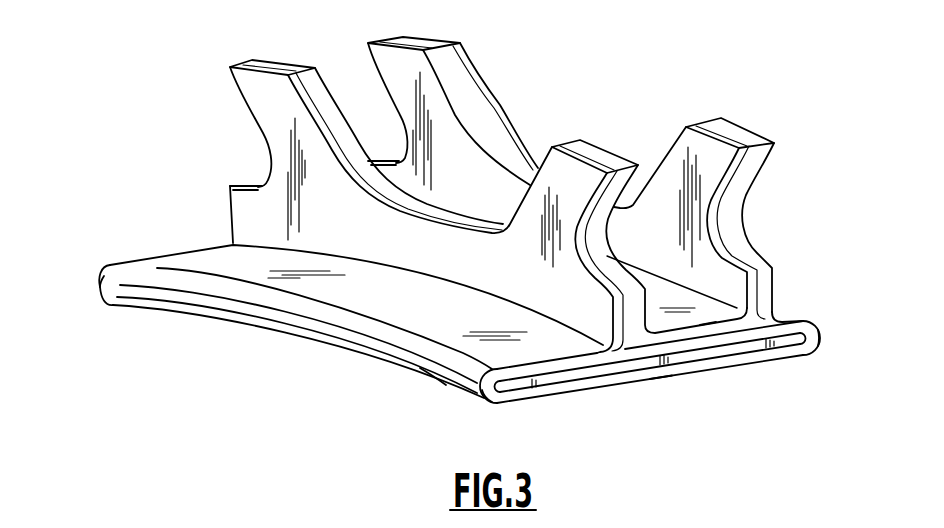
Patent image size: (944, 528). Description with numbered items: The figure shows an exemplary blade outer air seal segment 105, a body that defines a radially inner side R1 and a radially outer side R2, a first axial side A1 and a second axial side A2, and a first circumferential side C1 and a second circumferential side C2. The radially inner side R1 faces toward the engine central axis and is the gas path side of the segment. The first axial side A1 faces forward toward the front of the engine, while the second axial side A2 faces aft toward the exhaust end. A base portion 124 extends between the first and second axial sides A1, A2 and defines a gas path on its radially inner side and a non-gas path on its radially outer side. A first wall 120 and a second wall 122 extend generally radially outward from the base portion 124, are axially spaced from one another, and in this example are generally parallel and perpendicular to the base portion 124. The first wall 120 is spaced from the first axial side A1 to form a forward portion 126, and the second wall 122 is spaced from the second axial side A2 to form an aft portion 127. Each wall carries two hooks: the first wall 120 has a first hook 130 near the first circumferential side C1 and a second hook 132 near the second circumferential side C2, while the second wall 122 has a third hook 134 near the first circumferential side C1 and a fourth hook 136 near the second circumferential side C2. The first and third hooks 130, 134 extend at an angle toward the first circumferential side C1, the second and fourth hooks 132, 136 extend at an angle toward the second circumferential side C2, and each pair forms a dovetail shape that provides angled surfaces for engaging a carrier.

The BOAS seal segment 105 is at (767, 67).
The first wall 120 is at (593, 152).
The second wall 122 is at (731, 127).
The base portion 124 is at (682, 357).
The forward portion 126 is at (400, 317).
The aft portion 127 is at (791, 318).
The first hook 130 is at (250, 112).
The second hook 132 is at (577, 182).
The third hook 134 is at (395, 72).
The fourth hook 136 is at (742, 160).
The first axial side A1 is at (443, 386).
The second axial side A2 is at (817, 341).
The first circumferential side C1 is at (102, 278).
The second circumferential side C2 is at (547, 395).
The radially inner side R1 is at (660, 379).
The radially outer side R2 is at (707, 323).